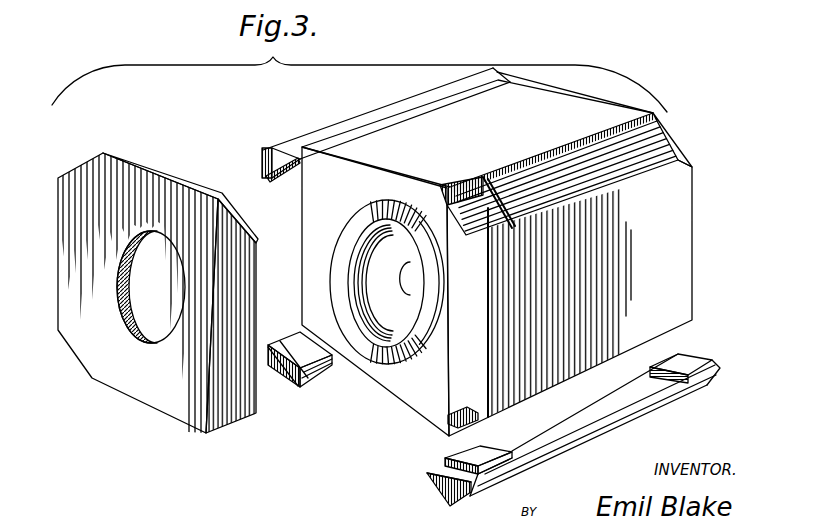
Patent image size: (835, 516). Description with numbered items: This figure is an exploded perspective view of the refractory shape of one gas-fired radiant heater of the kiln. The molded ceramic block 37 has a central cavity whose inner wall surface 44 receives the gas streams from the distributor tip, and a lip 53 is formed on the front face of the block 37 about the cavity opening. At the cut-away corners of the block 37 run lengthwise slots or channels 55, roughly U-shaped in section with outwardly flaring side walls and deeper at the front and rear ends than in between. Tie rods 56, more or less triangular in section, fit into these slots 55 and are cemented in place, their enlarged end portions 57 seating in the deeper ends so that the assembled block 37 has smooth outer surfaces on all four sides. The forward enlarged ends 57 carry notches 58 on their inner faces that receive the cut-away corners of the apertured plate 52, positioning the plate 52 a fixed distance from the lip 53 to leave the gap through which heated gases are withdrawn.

The molded block 37 is at (696, 197).
The inner wall surface 44 is at (350, 249).
The plate 52 is at (190, 163).
The lip 53 is at (402, 338).
The slots or channels 55 is at (570, 165).
The tie rods 56 is at (403, 112).
The enlarged end portions 57 is at (262, 157).
The notches 58 is at (276, 175).